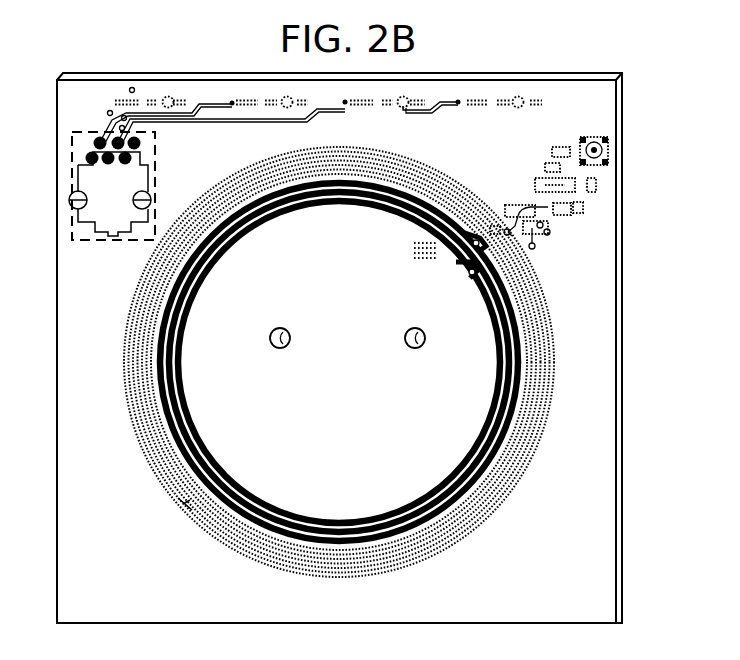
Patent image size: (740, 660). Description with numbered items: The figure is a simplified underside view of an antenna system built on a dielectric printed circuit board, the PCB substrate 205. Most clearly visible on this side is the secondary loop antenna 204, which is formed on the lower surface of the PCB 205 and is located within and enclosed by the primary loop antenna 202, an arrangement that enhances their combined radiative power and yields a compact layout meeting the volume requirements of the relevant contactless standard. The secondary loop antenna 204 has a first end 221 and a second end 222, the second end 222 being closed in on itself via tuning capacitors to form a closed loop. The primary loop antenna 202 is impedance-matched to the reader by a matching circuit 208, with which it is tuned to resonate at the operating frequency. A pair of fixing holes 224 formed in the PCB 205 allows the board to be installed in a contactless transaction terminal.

The primary loop antenna 202 is at (547, 308).
The secondary loop antenna 204 is at (482, 444).
The PCB substrate 205 is at (597, 538).
The matching circuit 208 is at (517, 226).
The first end 221 is at (477, 240).
The second end 222 is at (471, 268).
The fixing holes 224 is at (290, 336).